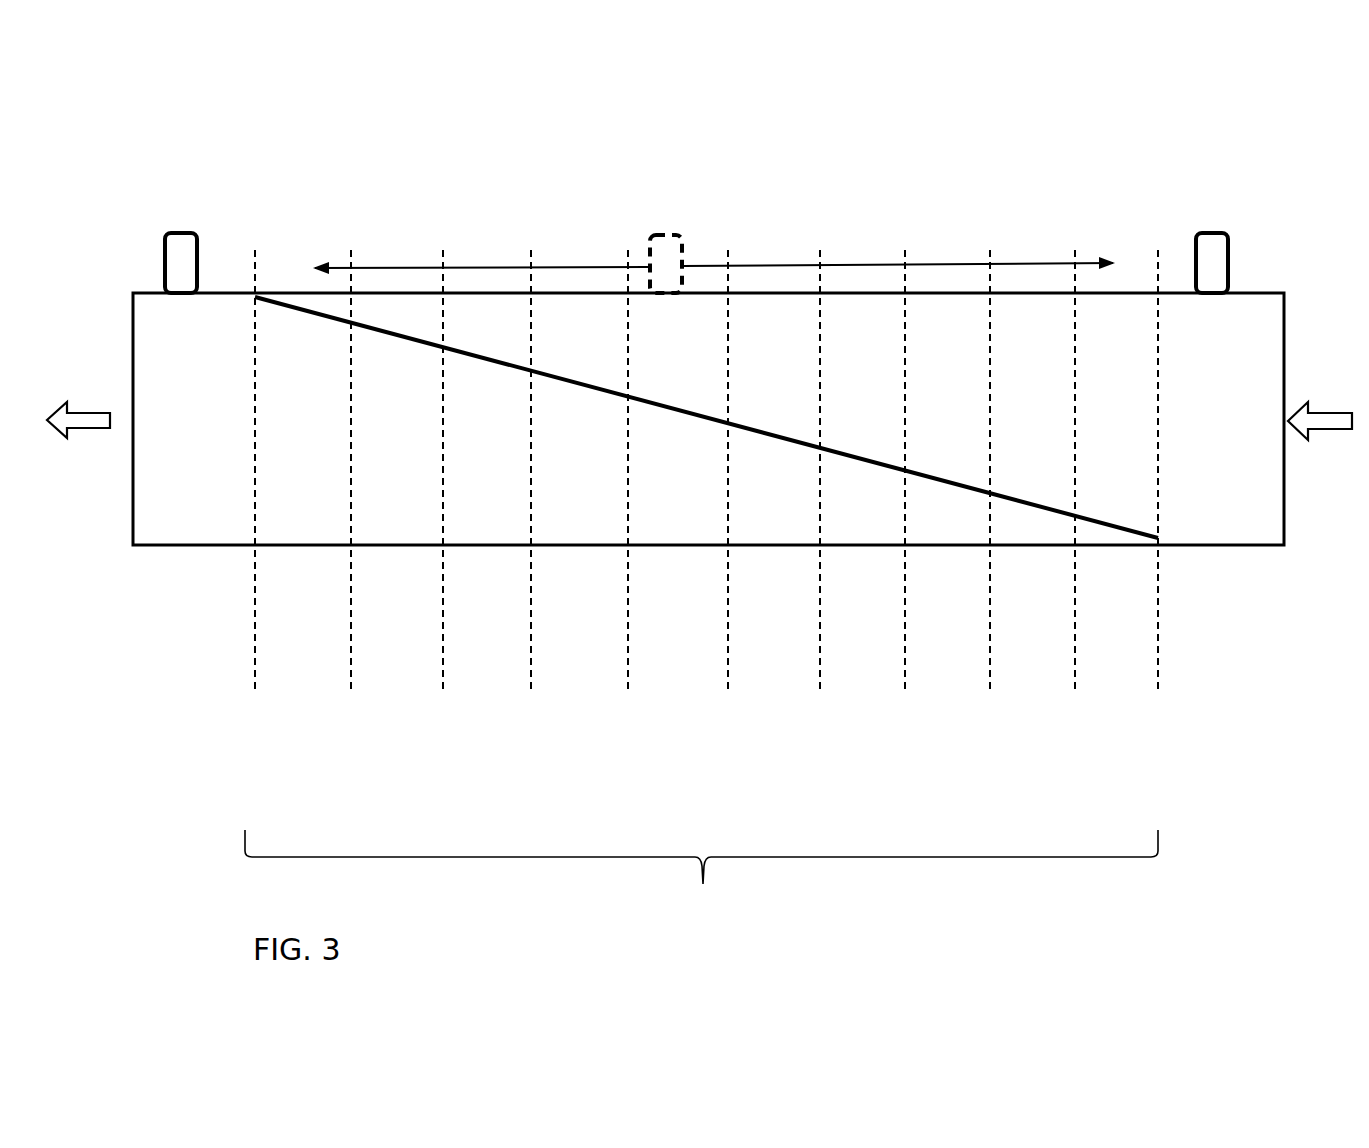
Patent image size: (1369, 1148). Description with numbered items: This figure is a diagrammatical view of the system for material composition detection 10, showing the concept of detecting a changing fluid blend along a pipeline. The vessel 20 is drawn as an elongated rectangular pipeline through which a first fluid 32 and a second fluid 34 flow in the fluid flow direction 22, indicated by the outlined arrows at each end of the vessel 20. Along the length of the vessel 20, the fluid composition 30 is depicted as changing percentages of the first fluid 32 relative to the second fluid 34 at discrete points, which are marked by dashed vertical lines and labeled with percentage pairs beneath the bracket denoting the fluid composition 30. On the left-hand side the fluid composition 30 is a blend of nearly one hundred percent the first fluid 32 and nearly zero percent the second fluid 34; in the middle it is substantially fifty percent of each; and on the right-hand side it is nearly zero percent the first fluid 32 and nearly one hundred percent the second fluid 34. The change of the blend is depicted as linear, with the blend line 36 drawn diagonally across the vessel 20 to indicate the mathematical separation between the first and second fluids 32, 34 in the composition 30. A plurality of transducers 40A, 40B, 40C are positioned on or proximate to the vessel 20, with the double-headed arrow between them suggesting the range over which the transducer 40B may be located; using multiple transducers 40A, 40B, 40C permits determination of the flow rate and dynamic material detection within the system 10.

The system for material composition detection 10 is at (486, 142).
The vessel 20 is at (180, 512).
The fluid flow direction 22 is at (90, 418).
The fluid composition 30 is at (687, 590).
The first fluid 32 is at (212, 446).
The second fluid 34 is at (1238, 435).
The blend line 36 is at (958, 475).
The transducer 40A is at (187, 232).
The transducer 40B is at (665, 232).
The transducer 40C is at (1215, 232).